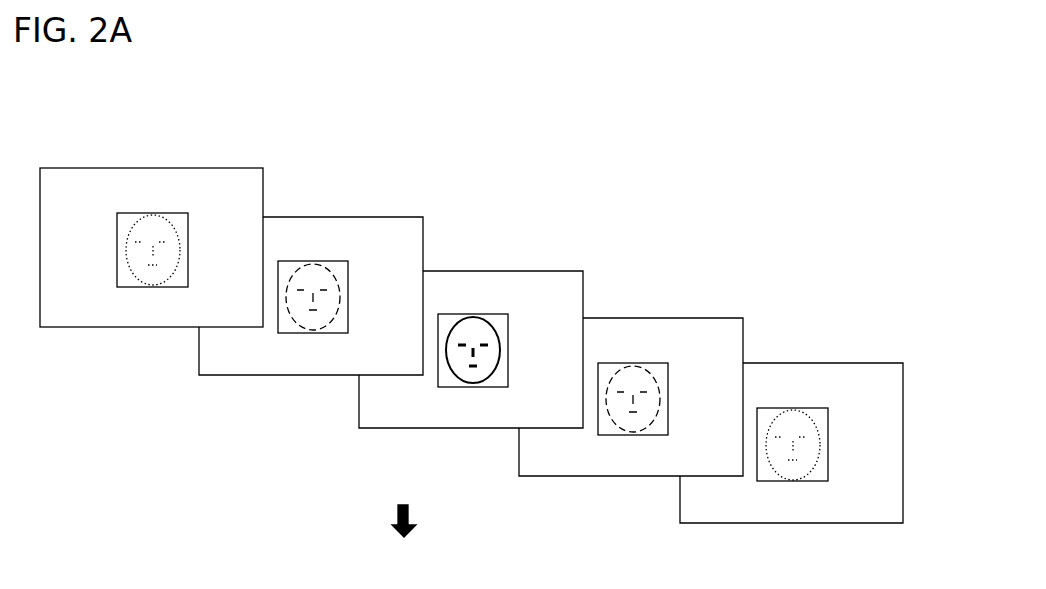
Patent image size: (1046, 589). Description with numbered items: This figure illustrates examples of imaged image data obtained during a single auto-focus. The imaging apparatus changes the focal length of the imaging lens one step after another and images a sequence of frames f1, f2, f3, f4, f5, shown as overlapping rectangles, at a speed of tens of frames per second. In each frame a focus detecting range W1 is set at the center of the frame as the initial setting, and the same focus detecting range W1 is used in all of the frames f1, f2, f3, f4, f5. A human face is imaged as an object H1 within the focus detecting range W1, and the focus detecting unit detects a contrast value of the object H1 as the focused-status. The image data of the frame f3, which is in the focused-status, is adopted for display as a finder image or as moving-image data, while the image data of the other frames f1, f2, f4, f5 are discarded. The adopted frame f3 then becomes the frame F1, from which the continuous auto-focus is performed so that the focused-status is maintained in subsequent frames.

The focus detecting range W1 is at (125, 213).
The object H1 is at (175, 231).
The frame f1 is at (78, 328).
The frame f2 is at (257, 376).
The frame f3 is at (404, 429).
The frame f4 is at (563, 477).
The frame f5 is at (718, 524).
The frame F1 is at (405, 539).